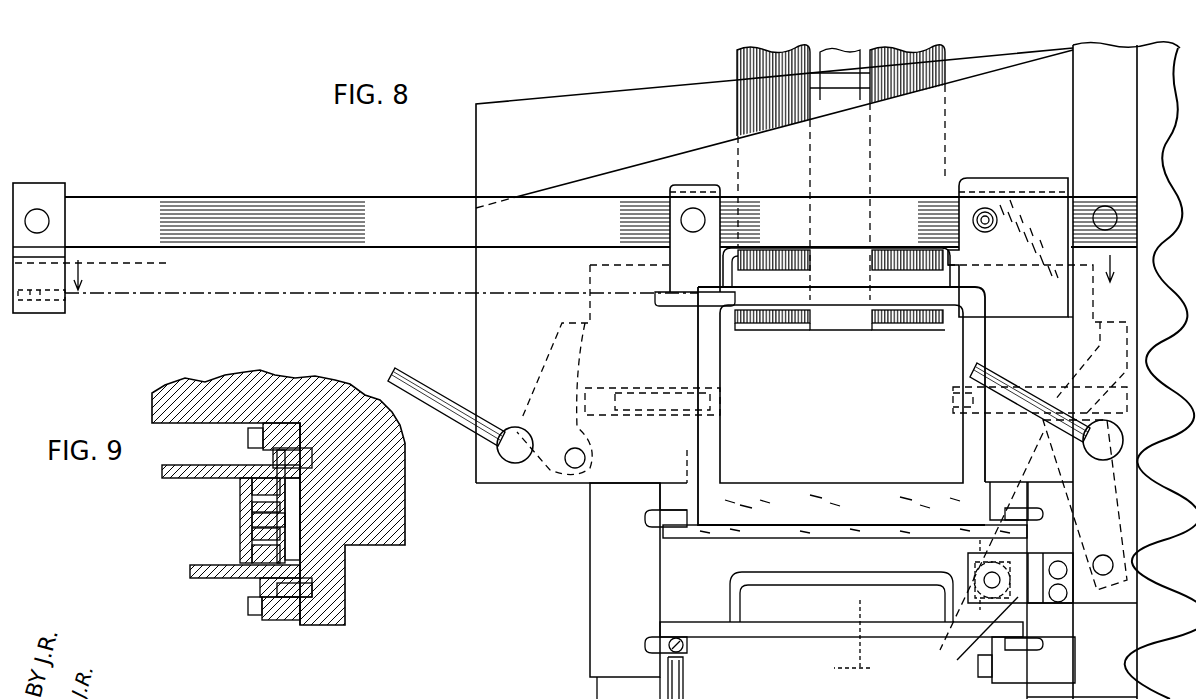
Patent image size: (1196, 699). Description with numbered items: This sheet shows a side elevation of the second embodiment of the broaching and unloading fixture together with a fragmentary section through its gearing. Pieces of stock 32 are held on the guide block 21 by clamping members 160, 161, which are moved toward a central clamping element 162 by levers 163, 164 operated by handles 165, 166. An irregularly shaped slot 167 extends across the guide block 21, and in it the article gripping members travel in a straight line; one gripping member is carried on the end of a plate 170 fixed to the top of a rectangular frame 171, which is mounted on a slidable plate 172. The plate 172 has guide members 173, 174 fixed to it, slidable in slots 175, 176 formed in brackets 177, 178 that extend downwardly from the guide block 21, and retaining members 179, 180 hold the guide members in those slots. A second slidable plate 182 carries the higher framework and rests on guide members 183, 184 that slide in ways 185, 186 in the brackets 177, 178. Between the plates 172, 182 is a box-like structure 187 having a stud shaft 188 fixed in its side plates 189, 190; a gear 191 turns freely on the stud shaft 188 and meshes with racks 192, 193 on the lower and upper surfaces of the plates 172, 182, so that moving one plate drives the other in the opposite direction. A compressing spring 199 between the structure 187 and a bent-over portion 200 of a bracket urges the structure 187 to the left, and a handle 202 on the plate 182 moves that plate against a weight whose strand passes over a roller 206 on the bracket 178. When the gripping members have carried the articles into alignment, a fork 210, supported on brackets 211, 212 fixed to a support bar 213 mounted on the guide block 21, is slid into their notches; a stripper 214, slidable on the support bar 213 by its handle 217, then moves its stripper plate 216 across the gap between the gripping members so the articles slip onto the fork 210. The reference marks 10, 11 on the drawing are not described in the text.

In FIG. 8, the direction arrow 10 is at (576, 271).
In FIG. 8, the center line 11 is at (862, 45).
In FIG. 8, the guide block 21 is at (503, 478).
In FIG. 8, the piece of stock 32 is at (745, 66).
In FIG. 8, the clamping member 160 is at (925, 325).
In FIG. 8, the clamping member 161 is at (590, 270).
In FIG. 8, the central clamping element 162 is at (857, 320).
In FIG. 8, the lever 163 is at (1045, 438).
In FIG. 8, the lever 164 is at (535, 385).
In FIG. 8, the handle 165 is at (995, 373).
In FIG. 8, the handle 166 is at (438, 395).
In FIG. 8, the irregularly shaped slot 167 is at (905, 322).
In FIG. 8, the plate 170 is at (845, 280).
In FIG. 8, the rectangular frame 171 is at (815, 335).
In FIG. 8, the slidable plate 172 is at (815, 533).
In FIG. 9, the slidable plate 172 is at (162, 472).
In FIG. 8, the guide member 173 is at (672, 527).
In FIG. 8, the guide member 174 is at (1015, 500).
In FIG. 9, the guide member 174 is at (273, 458).
In FIG. 8, the slot 175 is at (650, 532).
In FIG. 8, the slot 176 is at (1035, 514).
In FIG. 8, the bracket 177 is at (590, 583).
In FIG. 8, the bracket 178 is at (1070, 622).
In FIG. 9, the bracket 178 is at (330, 625).
In FIG. 8, the retaining member 179 is at (660, 500).
In FIG. 8, the retaining member 180 is at (1045, 500).
In FIG. 8, the slidable plate 182 is at (815, 637).
In FIG. 9, the slidable plate 182 is at (190, 571).
In FIG. 8, the guide member 183 is at (684, 647).
In FIG. 8, the guide member 184 is at (1035, 645).
In FIG. 9, the guide member 184 is at (312, 590).
In FIG. 8, the way 185 is at (650, 638).
In FIG. 8, the way 186 is at (1040, 640).
In FIG. 8, the box-like structure 187 is at (975, 552).
In FIG. 9, the stud shaft 188 is at (252, 520).
In FIG. 9, the side plate 189 is at (252, 540).
In FIG. 9, the side plate 190 is at (285, 548).
In FIG. 9, the gear 191 is at (252, 507).
In FIG. 9, the rack 192 is at (252, 487).
In FIG. 9, the rack 193 is at (255, 580).
In FIG. 8, the compressing spring 199 is at (960, 625).
In FIG. 8, the bent-over portion 200 is at (971, 639).
In FIG. 8, the handle 202 is at (853, 578).
In FIG. 8, the roller 206 is at (685, 684).
In FIG. 8, the fork 210 is at (322, 295).
In FIG. 8, the bracket 211 is at (52, 187).
In FIG. 8, the bracket 212 is at (691, 190).
In FIG. 8, the support bar 213 is at (310, 200).
In FIG. 8, the stripper 214 is at (1048, 172).
In FIG. 8, the stripper plate 216 is at (1015, 308).
In FIG. 8, the handle 217 is at (985, 208).